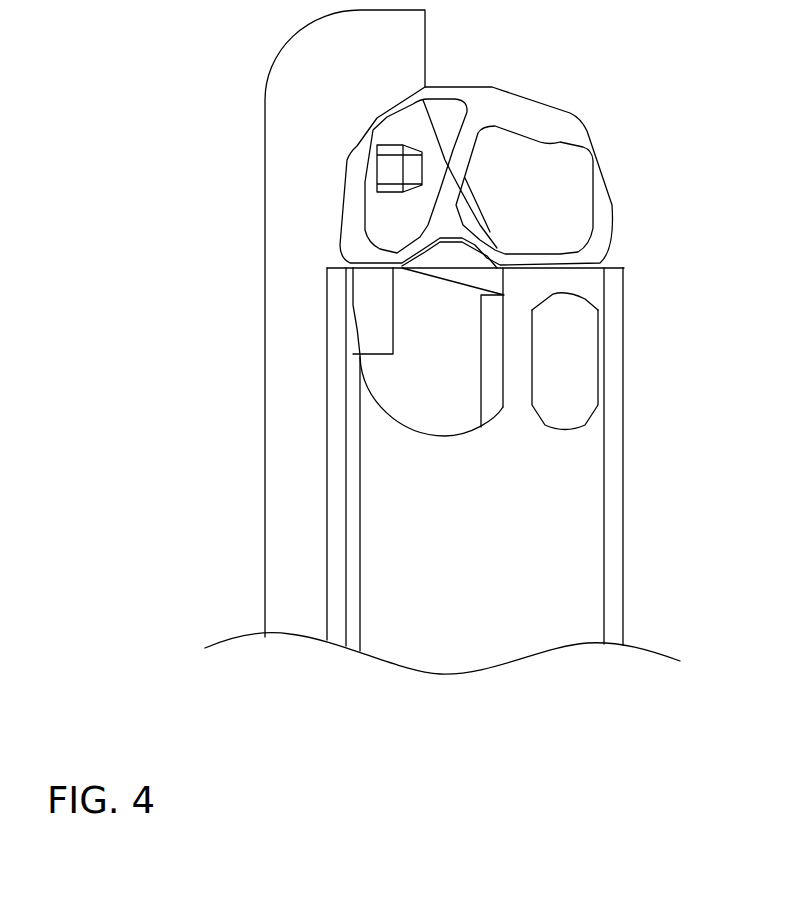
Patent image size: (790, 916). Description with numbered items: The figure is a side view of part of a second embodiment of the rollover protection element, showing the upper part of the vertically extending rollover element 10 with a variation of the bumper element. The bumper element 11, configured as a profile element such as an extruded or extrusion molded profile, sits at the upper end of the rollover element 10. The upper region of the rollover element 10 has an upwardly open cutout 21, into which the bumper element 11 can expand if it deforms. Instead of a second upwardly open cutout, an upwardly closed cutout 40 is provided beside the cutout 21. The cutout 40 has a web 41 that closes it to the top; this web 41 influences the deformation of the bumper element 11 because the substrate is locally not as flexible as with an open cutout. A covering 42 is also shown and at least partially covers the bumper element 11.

The rollover element 10 is at (578, 502).
The bumper element 11 is at (592, 153).
The cutout 21 is at (421, 351).
The upwardly closed cutout 40 is at (576, 348).
The web 41 is at (563, 287).
The covering 42 is at (303, 75).